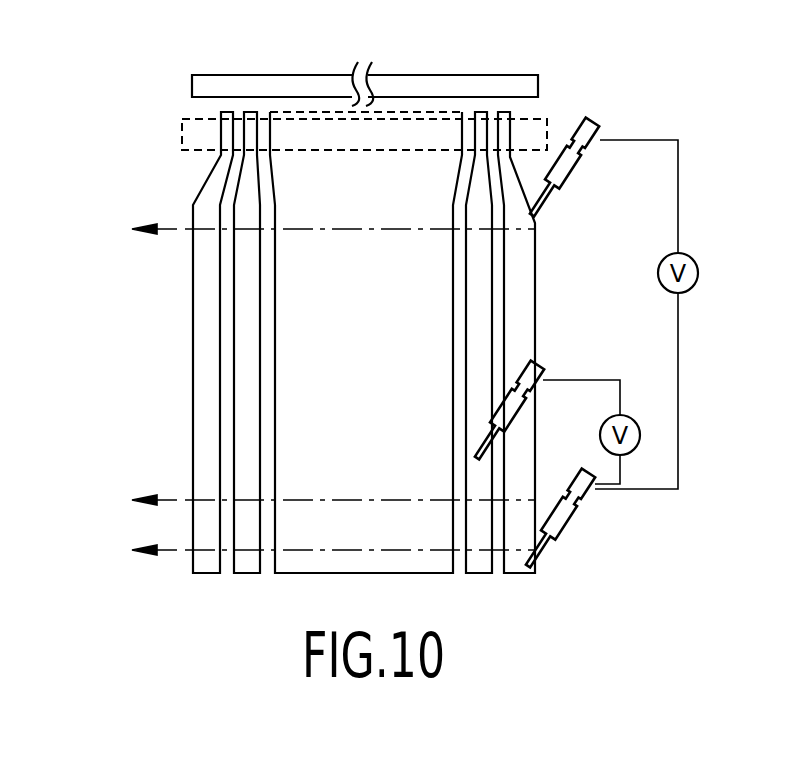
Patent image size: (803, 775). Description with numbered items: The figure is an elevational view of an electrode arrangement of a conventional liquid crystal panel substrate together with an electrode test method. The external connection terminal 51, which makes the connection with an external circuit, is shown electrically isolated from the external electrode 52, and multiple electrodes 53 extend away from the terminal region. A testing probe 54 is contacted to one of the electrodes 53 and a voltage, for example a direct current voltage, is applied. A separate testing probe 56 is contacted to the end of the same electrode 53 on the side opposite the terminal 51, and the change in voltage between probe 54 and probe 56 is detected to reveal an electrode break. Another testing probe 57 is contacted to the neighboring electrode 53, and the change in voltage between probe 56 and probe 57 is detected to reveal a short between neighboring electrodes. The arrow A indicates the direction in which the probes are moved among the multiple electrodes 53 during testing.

The external connection terminal 51 is at (181, 133).
The external electrode 52 is at (322, 74).
The electrodes 53 is at (253, 415).
The testing probe 54 is at (590, 126).
The testing probe 56 is at (565, 522).
The testing probe 57 is at (538, 360).
The arrow A is at (82, 218).